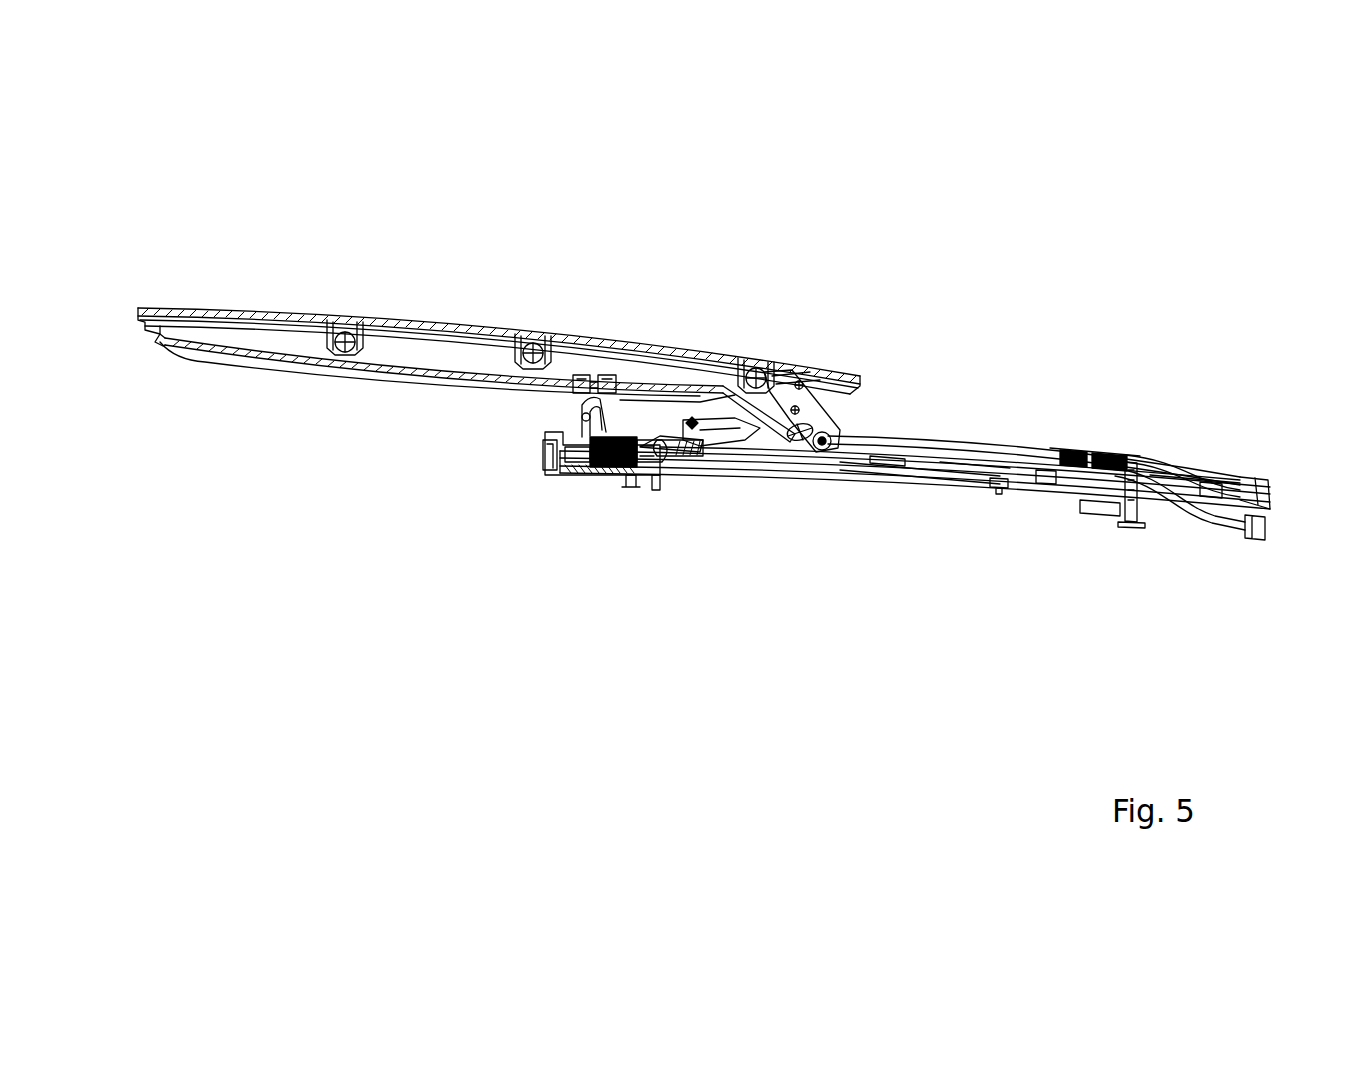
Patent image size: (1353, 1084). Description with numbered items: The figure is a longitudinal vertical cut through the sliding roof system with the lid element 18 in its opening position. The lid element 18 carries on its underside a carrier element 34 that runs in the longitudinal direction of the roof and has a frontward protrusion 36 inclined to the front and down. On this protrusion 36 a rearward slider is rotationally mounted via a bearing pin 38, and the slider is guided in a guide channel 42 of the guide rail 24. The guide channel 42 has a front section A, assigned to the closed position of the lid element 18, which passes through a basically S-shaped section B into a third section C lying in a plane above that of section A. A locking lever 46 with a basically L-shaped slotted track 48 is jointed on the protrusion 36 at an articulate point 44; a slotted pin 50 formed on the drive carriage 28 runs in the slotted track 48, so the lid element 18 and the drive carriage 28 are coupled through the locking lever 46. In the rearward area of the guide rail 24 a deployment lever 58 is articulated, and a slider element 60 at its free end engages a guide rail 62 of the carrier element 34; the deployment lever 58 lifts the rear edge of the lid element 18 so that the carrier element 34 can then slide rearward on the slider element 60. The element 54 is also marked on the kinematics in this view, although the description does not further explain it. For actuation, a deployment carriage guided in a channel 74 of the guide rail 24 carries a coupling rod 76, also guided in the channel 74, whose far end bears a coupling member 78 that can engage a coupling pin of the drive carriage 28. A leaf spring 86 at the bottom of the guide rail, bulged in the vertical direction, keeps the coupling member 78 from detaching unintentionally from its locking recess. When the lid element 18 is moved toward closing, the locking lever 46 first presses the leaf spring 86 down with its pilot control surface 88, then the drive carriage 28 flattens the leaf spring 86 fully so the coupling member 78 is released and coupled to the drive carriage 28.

The carrier element 34 is at (243, 340).
The lid element 18 is at (338, 318).
The slider element 60 is at (615, 378).
The sliding clips 54 is at (660, 440).
The frontward protrusion 36 is at (782, 392).
The articulate point 44 is at (805, 380).
The bearing pin 38 is at (824, 432).
The third section C is at (974, 456).
The guide channel 42 is at (1107, 470).
The S-shaped section B is at (1168, 502).
The front section A is at (1228, 525).
The deployment lever 58 is at (582, 396).
The guide rail 62 is at (330, 362).
The drive carriage 28 is at (596, 470).
The slotted pin 50 is at (632, 473).
The pilot control surface 88 is at (672, 468).
The slotted track 48 is at (699, 462).
The locking lever 46 is at (745, 446).
The channel 74 is at (855, 455).
The coupling rod 76 is at (883, 460).
The guide rail 24 is at (942, 486).
The leaf spring 86 is at (1000, 488).
The coupling member 78 is at (1044, 484).